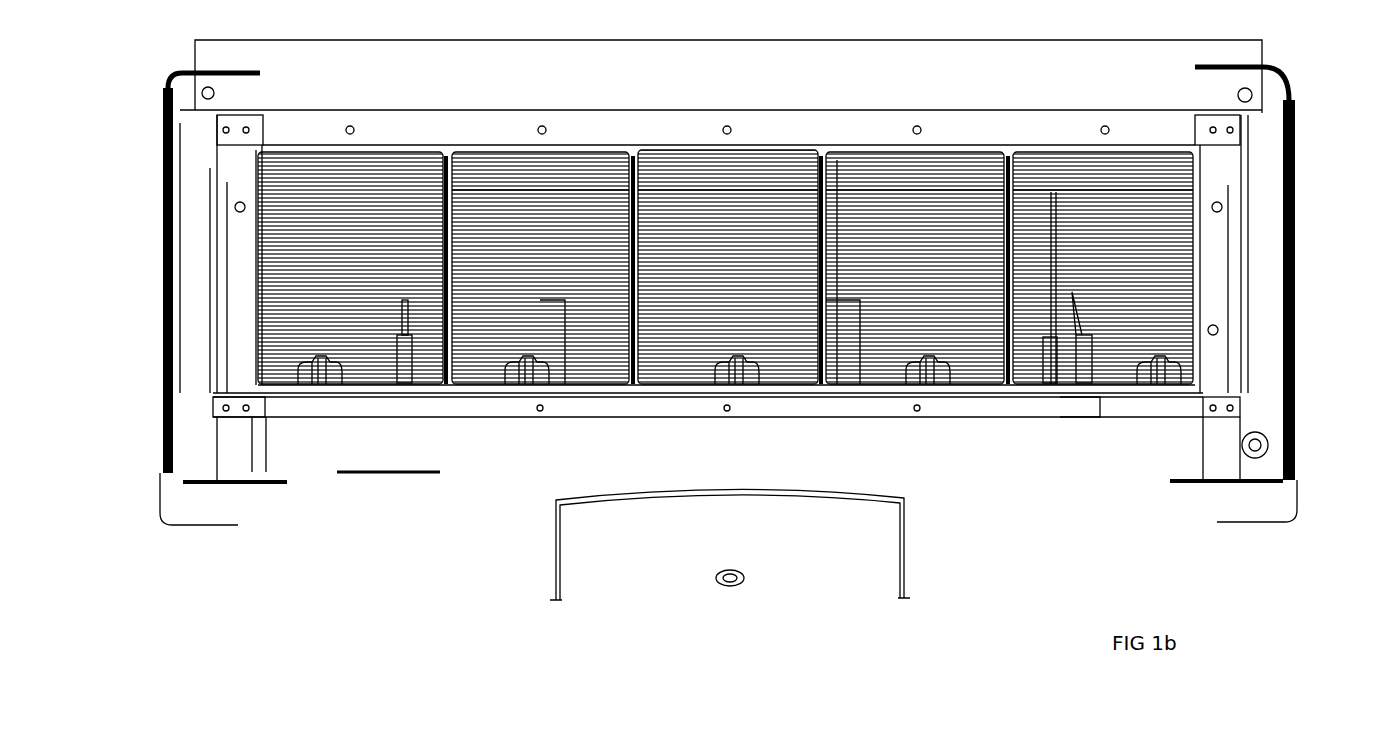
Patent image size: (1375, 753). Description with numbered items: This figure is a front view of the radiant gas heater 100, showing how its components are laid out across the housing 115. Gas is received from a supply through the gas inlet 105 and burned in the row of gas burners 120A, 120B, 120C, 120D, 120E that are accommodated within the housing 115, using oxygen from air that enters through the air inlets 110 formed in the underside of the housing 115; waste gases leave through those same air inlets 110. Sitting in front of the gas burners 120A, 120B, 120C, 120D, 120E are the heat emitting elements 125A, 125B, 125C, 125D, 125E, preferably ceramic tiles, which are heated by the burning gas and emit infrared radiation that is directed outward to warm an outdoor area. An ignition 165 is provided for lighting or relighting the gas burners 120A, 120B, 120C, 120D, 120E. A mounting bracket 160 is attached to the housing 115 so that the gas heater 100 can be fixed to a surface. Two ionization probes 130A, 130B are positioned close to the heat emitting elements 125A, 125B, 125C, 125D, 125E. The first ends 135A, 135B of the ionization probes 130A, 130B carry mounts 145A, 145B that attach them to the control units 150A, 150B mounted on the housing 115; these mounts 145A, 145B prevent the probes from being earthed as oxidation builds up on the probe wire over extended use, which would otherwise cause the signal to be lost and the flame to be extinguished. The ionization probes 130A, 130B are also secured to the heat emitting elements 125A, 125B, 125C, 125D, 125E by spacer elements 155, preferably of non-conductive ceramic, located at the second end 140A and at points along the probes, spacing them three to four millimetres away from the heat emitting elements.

The radiant gas heater 100 is at (359, 614).
The gas inlet 105 is at (1253, 455).
The air inlets 110 is at (426, 500).
The housing 115 is at (158, 212).
The gas burner 120A is at (300, 378).
The gas burner 120B is at (532, 373).
The gas burner 120C is at (728, 377).
The gas burner 120D is at (937, 380).
The gas burner 120E is at (1177, 368).
The heat emitting element 125A is at (304, 150).
The heat emitting element 125B is at (508, 150).
The heat emitting element 125C is at (705, 148).
The heat emitting element 125D is at (882, 148).
The heat emitting element 125E is at (1077, 148).
The ionization probe 130A is at (552, 303).
The ionization probe 130B is at (943, 193).
The first end 135A is at (407, 312).
The first end 135B is at (1057, 248).
The second end 140A is at (860, 305).
The mount 145A is at (407, 368).
The mount 145B is at (1050, 363).
The control unit 150A is at (408, 400).
The control unit 150B is at (1077, 403).
The spacer elements 155 is at (631, 308).
The mounting bracket 160 is at (865, 585).
The ignition 165 is at (1083, 355).